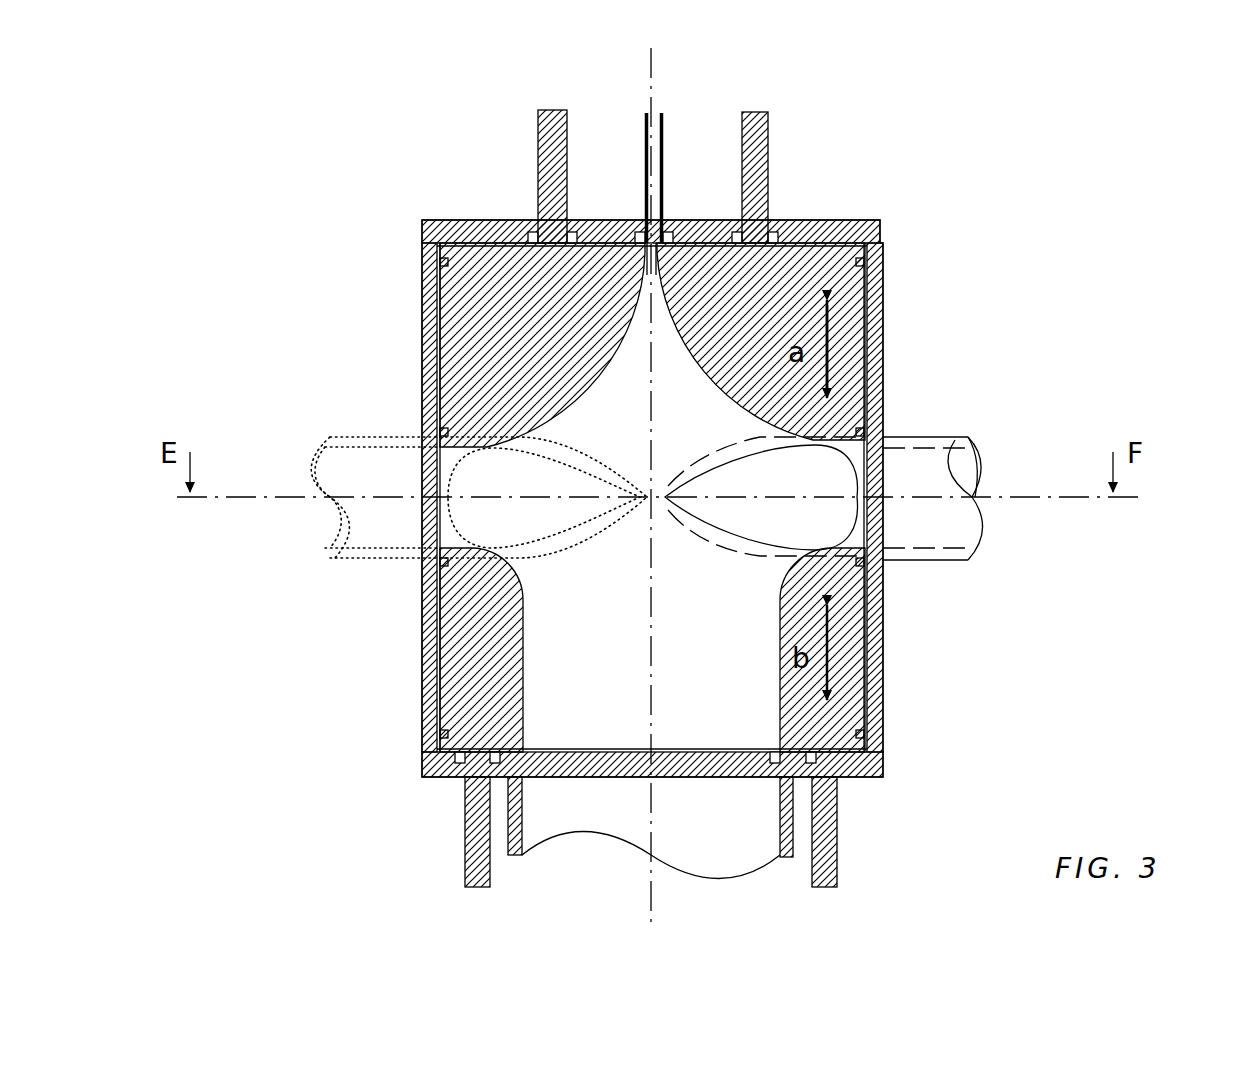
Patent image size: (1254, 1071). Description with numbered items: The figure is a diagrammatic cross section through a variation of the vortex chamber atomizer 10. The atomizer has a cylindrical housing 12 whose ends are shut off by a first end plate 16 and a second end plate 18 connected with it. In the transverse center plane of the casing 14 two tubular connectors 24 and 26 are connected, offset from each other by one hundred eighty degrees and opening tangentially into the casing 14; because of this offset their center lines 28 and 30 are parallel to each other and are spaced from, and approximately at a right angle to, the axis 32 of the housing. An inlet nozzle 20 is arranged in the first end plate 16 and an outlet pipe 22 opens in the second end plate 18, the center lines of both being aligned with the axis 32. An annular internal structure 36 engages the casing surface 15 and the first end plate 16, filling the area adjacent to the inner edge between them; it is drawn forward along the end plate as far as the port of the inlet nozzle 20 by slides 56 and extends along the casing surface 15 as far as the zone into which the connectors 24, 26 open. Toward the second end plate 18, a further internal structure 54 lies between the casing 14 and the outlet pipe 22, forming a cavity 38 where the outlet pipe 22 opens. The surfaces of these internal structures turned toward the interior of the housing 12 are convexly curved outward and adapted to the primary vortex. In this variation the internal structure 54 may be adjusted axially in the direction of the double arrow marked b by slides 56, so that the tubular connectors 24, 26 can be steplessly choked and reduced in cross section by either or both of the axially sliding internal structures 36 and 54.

The vortex chamber atomizer 10 is at (900, 234).
The cylindrical housing 12 is at (895, 277).
The casing 14 is at (880, 382).
The casing surface 15 is at (437, 368).
The first end plate 16 is at (815, 222).
The second end plate 18 is at (420, 773).
The inlet nozzle 20 is at (663, 150).
The outlet pipe 22 is at (780, 862).
The tubular connector 24 is at (345, 555).
The tubular connector 26 is at (975, 558).
The center line 28 is at (297, 497).
The center line 30 is at (990, 497).
The axis of the housing 32 is at (651, 905).
The internal structure 36 is at (437, 285).
The cavity 38 is at (773, 572).
The internal structure 54 is at (450, 668).
The slides 56 is at (538, 148).